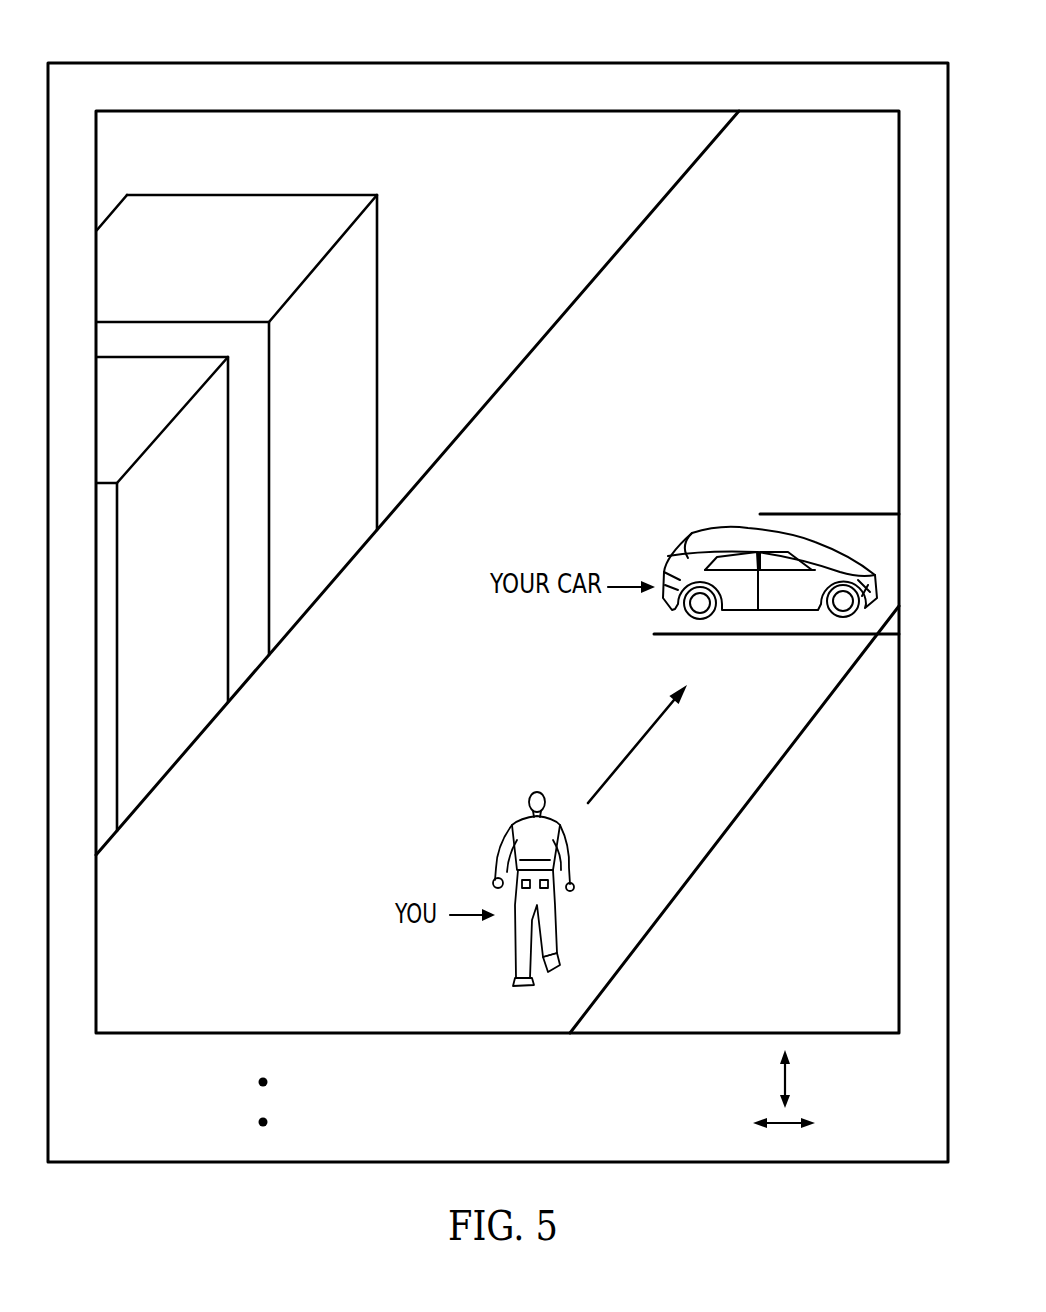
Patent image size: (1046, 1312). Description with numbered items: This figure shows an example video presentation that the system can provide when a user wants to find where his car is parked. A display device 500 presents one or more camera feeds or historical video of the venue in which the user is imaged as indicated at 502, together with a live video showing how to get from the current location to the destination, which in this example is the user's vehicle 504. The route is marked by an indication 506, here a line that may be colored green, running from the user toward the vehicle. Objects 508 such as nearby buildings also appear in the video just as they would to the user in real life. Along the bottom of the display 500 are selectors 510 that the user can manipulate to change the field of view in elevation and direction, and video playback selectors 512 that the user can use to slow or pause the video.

The display device 500 is at (498, 63).
The user 502 is at (512, 830).
The vehicle 504 is at (668, 550).
The indication 506 is at (628, 755).
The objects 508 is at (368, 193).
The selectors 510 is at (815, 1106).
The video playback selectors 512 is at (360, 1102).